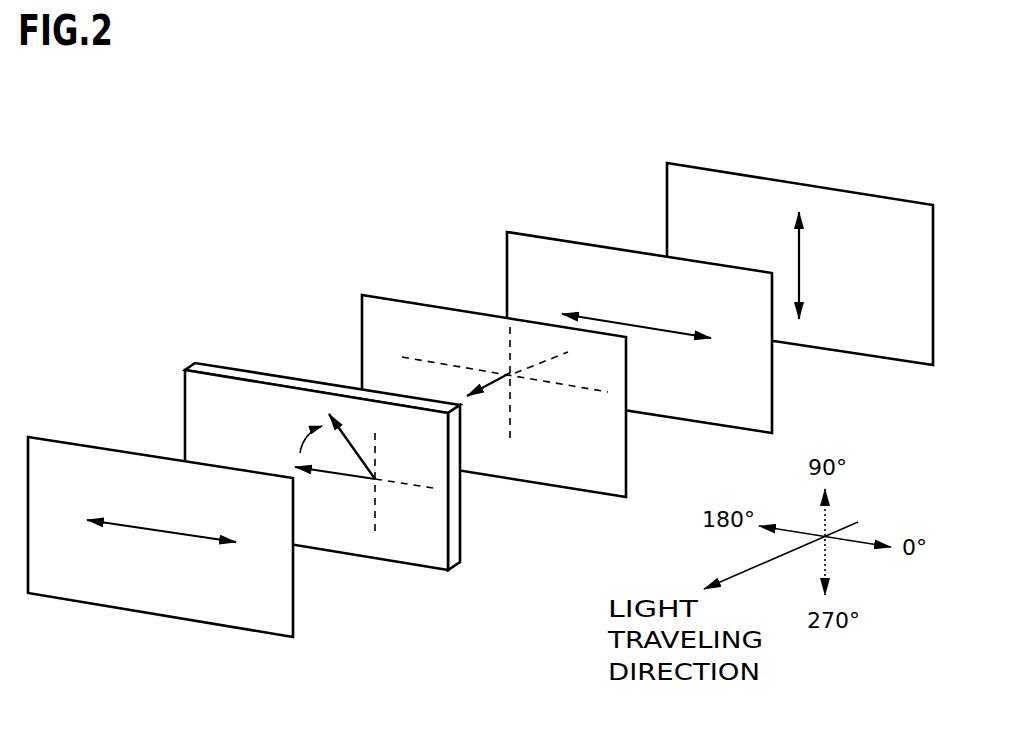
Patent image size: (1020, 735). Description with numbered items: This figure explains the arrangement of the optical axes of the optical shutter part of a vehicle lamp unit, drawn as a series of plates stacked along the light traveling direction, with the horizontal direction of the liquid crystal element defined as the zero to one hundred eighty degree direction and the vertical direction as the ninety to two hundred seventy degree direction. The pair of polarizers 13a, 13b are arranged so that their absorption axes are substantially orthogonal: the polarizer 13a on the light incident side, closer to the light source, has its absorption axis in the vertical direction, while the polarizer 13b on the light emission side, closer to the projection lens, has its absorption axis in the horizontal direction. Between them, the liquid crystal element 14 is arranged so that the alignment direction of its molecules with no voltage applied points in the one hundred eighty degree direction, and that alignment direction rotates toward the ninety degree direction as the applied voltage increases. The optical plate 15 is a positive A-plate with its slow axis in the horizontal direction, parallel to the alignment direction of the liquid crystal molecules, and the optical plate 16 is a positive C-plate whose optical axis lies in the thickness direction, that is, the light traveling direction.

The polarizer 13a is at (718, 168).
The polarizer 13b is at (56, 435).
The liquid crystal element 14 is at (213, 362).
The optical plate 15 is at (536, 237).
The optical plate 16 is at (404, 300).